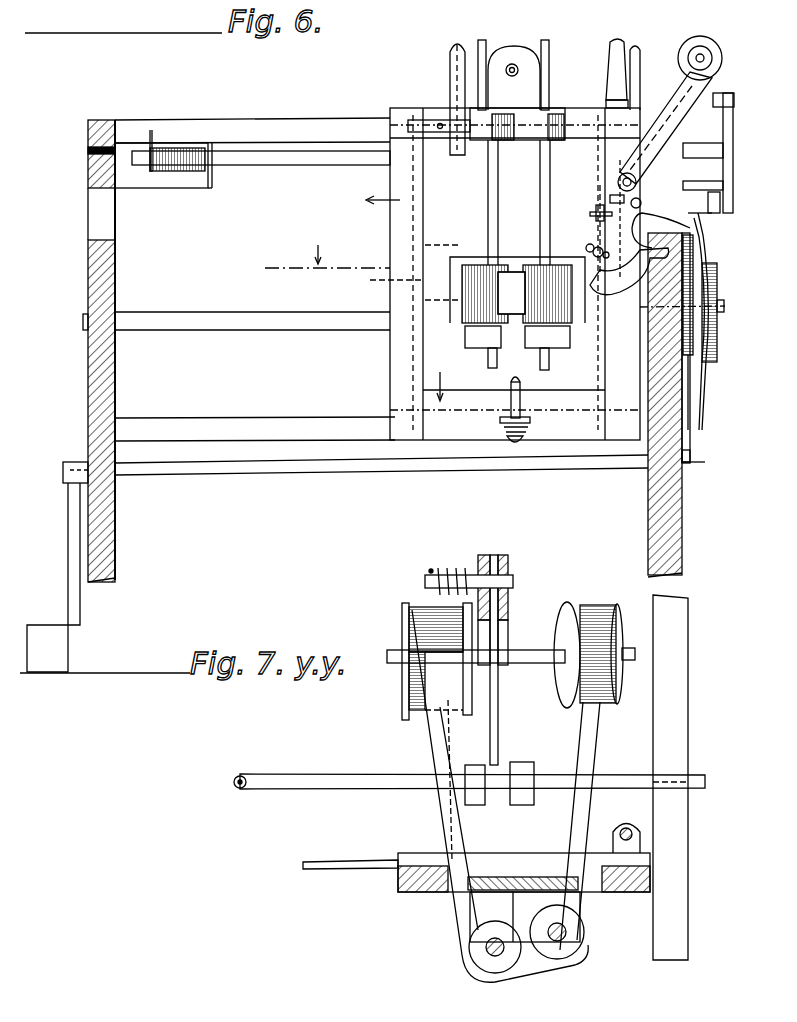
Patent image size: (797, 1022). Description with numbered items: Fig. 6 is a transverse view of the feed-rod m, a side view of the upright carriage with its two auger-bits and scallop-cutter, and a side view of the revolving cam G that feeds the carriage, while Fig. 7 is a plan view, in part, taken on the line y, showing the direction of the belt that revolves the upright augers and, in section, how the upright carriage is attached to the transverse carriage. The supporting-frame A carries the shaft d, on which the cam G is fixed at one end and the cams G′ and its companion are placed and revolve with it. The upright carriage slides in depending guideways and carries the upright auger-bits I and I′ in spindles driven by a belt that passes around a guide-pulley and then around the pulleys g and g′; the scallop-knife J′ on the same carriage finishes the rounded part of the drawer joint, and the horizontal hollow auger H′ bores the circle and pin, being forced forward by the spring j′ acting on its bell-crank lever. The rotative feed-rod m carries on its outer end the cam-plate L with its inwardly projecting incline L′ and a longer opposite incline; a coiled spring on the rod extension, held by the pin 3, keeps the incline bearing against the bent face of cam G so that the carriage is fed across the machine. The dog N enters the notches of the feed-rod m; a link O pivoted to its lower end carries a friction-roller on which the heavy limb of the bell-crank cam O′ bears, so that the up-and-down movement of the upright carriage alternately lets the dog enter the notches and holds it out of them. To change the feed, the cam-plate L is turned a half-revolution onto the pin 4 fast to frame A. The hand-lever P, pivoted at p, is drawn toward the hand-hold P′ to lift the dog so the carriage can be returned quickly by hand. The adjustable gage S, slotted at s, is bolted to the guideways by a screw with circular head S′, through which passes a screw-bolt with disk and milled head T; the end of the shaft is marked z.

In FIG. 6, the pin 3 is at (148, 143).
In FIG. 6, the feed-rod m is at (748, 150).
In FIG. 6, the section line y is at (317, 262).
In FIG. 6, the shaft d is at (730, 302).
In FIG. 7, the shaft d is at (472, 765).
In FIG. 6, the supporting-frame A is at (115, 534).
In FIG. 7, the supporting-frame A is at (688, 884).
In FIG. 6, the scallop-knife J′ is at (448, 60).
In FIG. 6, the upright auger-bit I is at (484, 46).
In FIG. 6, the hollow auger H′ is at (517, 93).
In FIG. 6, the upright auger-bit I′ is at (550, 64).
In FIG. 6, the hand-hold P′ is at (612, 45).
In FIG. 6, the hand-lever P is at (620, 70).
In FIG. 6, the milled head T is at (708, 52).
In FIG. 6, the adjustable metal gage S is at (668, 128).
In FIG. 6, the longitudinal slot s is at (648, 148).
In FIG. 6, the circular head S′ is at (638, 182).
In FIG. 6, the incline L′ is at (734, 100).
In FIG. 6, the cam-plate L is at (733, 126).
In FIG. 6, the pin 4 is at (723, 184).
In FIG. 6, the detent or dog N is at (616, 176).
In FIG. 7, the detent or dog N is at (627, 827).
In FIG. 6, the link O is at (612, 248).
In FIG. 6, the bell-crank cam O′ is at (582, 238).
In FIG. 6, the pivot p is at (640, 243).
In FIG. 6, the cam G is at (712, 240).
In FIG. 6, the pulley g is at (483, 337).
In FIG. 7, the pulley g is at (505, 962).
In FIG. 6, the pulley g′ is at (547, 337).
In FIG. 7, the pulley g′ is at (557, 931).
In FIG. 7, the spring j′ is at (434, 572).
In FIG. 7, the cam G′ is at (522, 769).
In FIG. 7, the rod end z is at (228, 783).